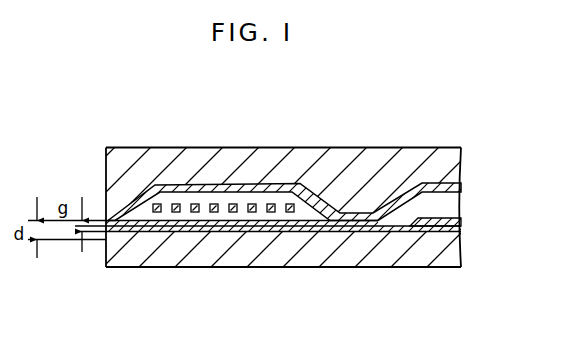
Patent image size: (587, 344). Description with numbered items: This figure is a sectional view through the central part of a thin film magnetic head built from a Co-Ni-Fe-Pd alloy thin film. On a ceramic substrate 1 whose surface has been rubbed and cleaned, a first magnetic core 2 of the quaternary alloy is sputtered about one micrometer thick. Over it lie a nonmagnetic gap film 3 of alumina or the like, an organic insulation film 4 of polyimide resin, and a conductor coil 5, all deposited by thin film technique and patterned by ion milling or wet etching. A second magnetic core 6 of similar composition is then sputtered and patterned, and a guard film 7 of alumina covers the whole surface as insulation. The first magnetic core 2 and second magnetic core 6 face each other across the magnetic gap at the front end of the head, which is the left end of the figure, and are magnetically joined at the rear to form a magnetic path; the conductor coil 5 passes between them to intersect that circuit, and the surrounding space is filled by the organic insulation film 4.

The ceramic substrate 1 is at (233, 252).
The first magnetic core 2 is at (346, 231).
The nonmagnetic gap film 3 is at (160, 226).
The organic insulation film 4 is at (296, 228).
The conductor coil 5 is at (233, 204).
The second magnetic core 6 is at (462, 188).
The guard film 7 is at (352, 163).